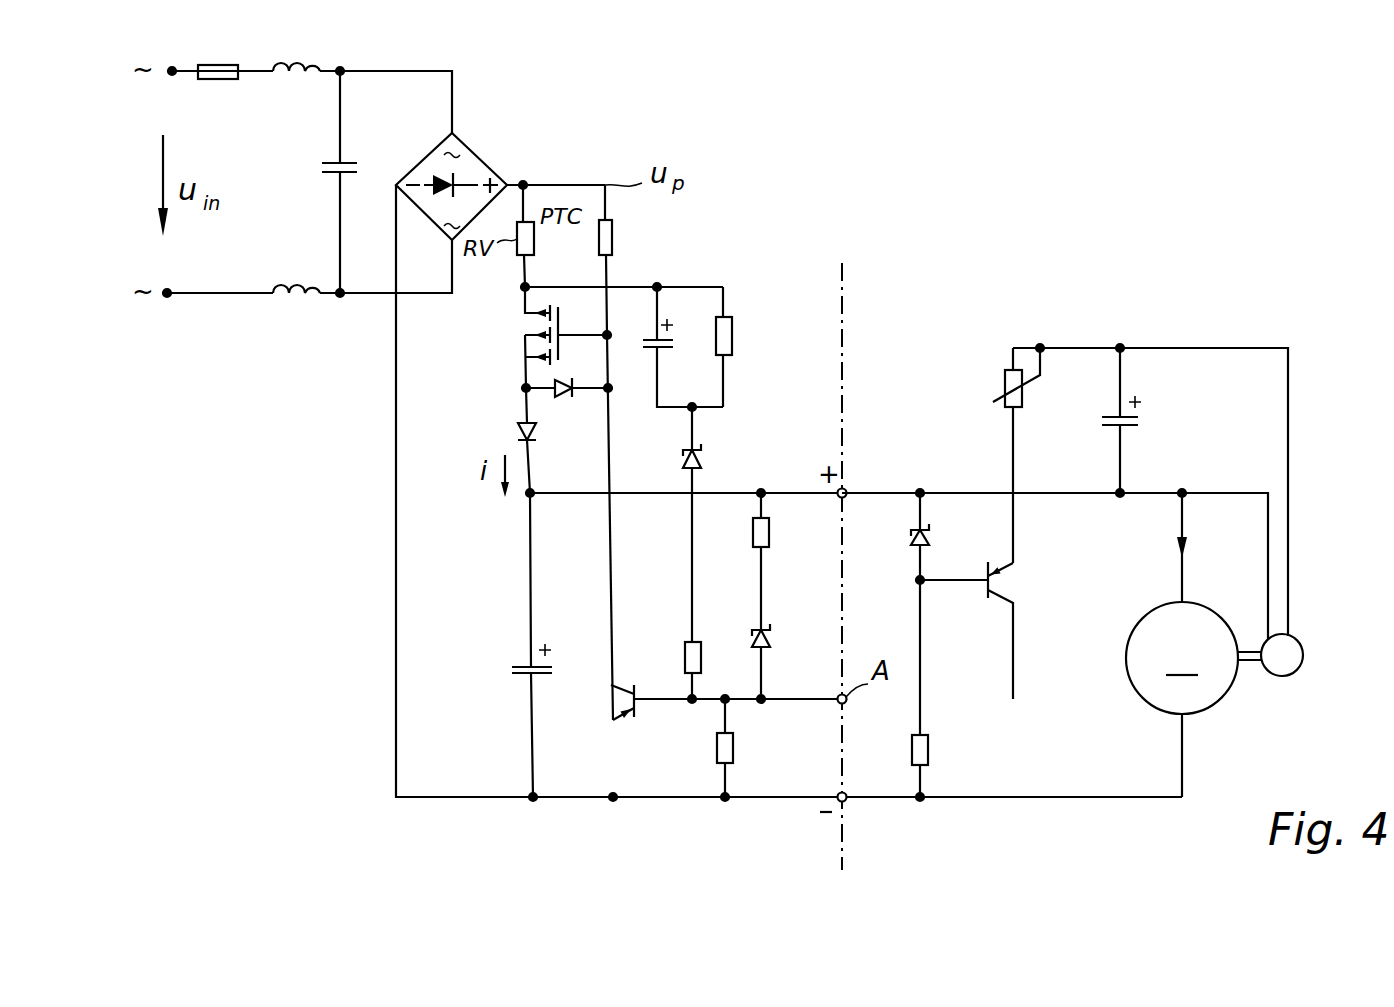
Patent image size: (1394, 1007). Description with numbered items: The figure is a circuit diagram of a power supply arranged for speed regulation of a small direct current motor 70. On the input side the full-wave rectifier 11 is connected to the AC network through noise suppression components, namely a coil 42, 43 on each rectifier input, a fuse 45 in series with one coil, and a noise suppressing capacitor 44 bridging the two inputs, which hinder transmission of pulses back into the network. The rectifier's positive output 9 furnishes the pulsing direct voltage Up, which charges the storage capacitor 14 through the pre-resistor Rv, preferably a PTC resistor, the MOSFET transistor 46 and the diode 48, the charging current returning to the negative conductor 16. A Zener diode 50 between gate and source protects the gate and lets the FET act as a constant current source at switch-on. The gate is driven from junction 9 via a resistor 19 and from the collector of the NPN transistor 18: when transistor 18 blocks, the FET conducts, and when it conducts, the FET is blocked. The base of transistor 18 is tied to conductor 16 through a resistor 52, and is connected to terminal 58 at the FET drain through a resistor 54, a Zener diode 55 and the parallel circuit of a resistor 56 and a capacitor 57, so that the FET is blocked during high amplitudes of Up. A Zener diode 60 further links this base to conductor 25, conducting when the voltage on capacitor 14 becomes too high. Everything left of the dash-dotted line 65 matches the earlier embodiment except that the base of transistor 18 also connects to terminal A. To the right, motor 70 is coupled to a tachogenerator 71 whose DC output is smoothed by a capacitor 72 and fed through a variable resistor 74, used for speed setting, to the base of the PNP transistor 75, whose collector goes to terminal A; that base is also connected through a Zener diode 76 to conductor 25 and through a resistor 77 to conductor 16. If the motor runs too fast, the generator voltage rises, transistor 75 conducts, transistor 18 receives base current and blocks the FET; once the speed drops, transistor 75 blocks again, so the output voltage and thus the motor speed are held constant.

The fuse 45 is at (222, 64).
The coil 42 is at (298, 64).
The coil 43 is at (294, 300).
The noise suppressing capacitor 44 is at (322, 166).
The full-wave rectifier 11 is at (478, 147).
The positive output 9 is at (523, 185).
The negative conductor 16 is at (394, 637).
The resistor 19 is at (612, 237).
The terminal 58 is at (522, 289).
The MOSFET transistor 46 is at (508, 350).
The Zener diode 50 is at (565, 400).
The diode 48 is at (517, 430).
The capacitor 57 is at (645, 345).
The resistor 56 is at (733, 333).
The Zener diode 55 is at (683, 461).
The resistor 54 is at (685, 653).
The conductor 25 is at (733, 492).
The Zener diode 60 is at (752, 636).
The NPN transistor 18 is at (618, 708).
The resistor 52 is at (735, 748).
The storage capacitor 14 is at (512, 667).
The dash-dotted line 65 is at (862, 318).
The Zener diode 76 is at (911, 542).
The resistor 77 is at (930, 748).
The variable resistor 74 is at (1005, 383).
The PNP transistor 75 is at (994, 570).
The capacitor 72 is at (1141, 420).
The direct current motor 70 is at (1222, 700).
The tachogenerator 71 is at (1303, 668).